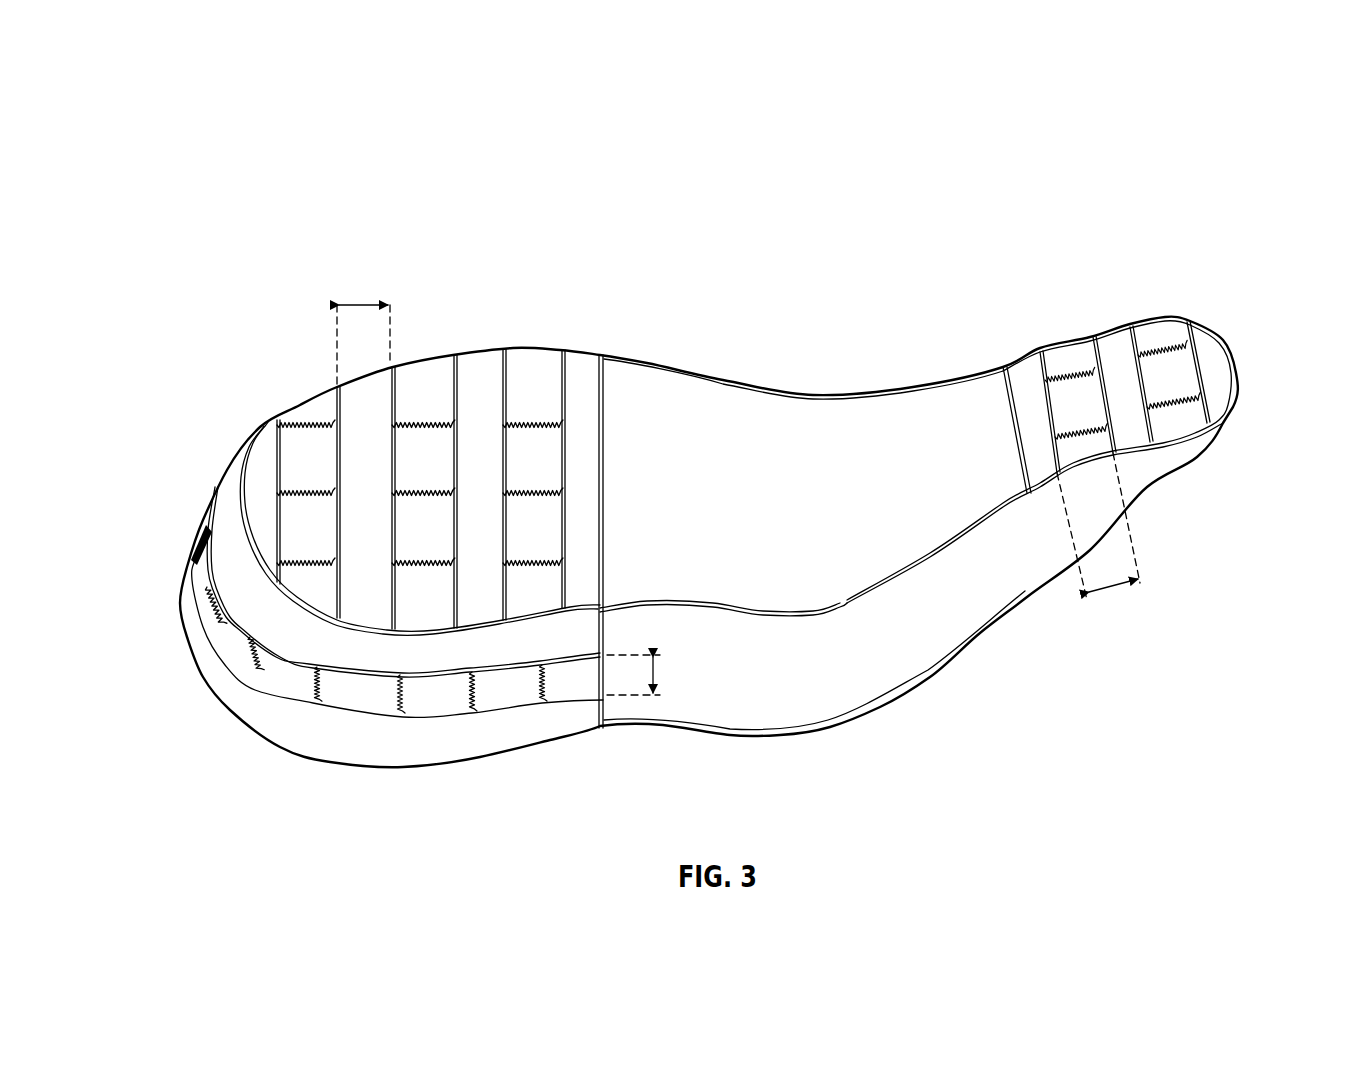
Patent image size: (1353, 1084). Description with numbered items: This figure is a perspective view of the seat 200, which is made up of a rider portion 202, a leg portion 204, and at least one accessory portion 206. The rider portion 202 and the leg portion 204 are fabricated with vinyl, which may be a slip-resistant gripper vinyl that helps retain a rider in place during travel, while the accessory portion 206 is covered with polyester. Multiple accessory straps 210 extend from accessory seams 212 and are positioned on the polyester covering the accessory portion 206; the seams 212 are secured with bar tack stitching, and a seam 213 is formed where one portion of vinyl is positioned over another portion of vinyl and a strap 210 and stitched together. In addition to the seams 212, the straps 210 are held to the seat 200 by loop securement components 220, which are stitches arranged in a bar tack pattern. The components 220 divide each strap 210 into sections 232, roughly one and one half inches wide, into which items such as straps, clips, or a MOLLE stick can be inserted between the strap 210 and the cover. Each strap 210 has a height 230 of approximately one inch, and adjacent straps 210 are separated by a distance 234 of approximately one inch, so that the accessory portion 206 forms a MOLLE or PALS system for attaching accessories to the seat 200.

The seat 200 is at (1118, 147).
The rider portion 202 is at (863, 408).
The leg portion 204 is at (827, 713).
The accessory portion 206 is at (473, 390).
The accessory straps 210 is at (317, 416).
The accessory seams 212 is at (578, 352).
The seam 213 is at (580, 612).
The loop securement components 220 is at (530, 488).
The height 230 is at (658, 677).
The sections 232 is at (413, 447).
The distance 234 is at (360, 302).